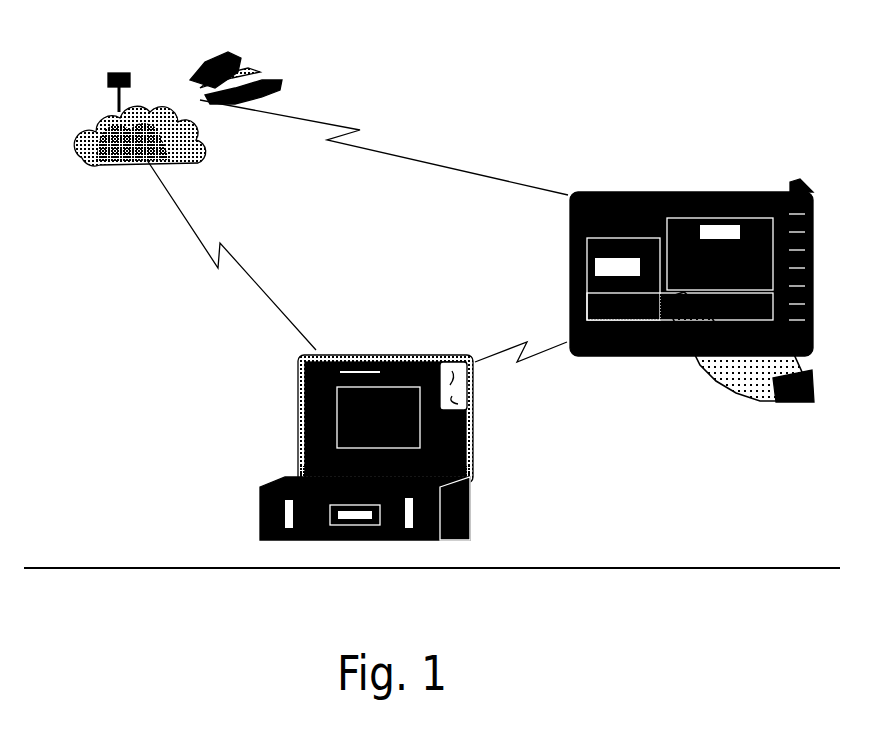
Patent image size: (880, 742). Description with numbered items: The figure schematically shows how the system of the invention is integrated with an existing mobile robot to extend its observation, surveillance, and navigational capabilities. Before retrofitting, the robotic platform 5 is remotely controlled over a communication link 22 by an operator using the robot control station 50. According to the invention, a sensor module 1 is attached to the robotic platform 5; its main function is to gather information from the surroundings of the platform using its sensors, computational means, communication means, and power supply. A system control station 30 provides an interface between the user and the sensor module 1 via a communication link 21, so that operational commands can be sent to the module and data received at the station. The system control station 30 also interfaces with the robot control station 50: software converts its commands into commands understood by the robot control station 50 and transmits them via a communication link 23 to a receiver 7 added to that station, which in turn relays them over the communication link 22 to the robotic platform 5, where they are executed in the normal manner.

The sensor module 1 is at (108, 72).
The robotic platform 5 is at (92, 125).
The receiver 7 is at (445, 357).
The communication link 21 is at (383, 152).
The communication link 22 is at (189, 229).
The communication link 23 is at (538, 355).
The system control station 30 is at (670, 184).
The robot control station 50 is at (257, 505).